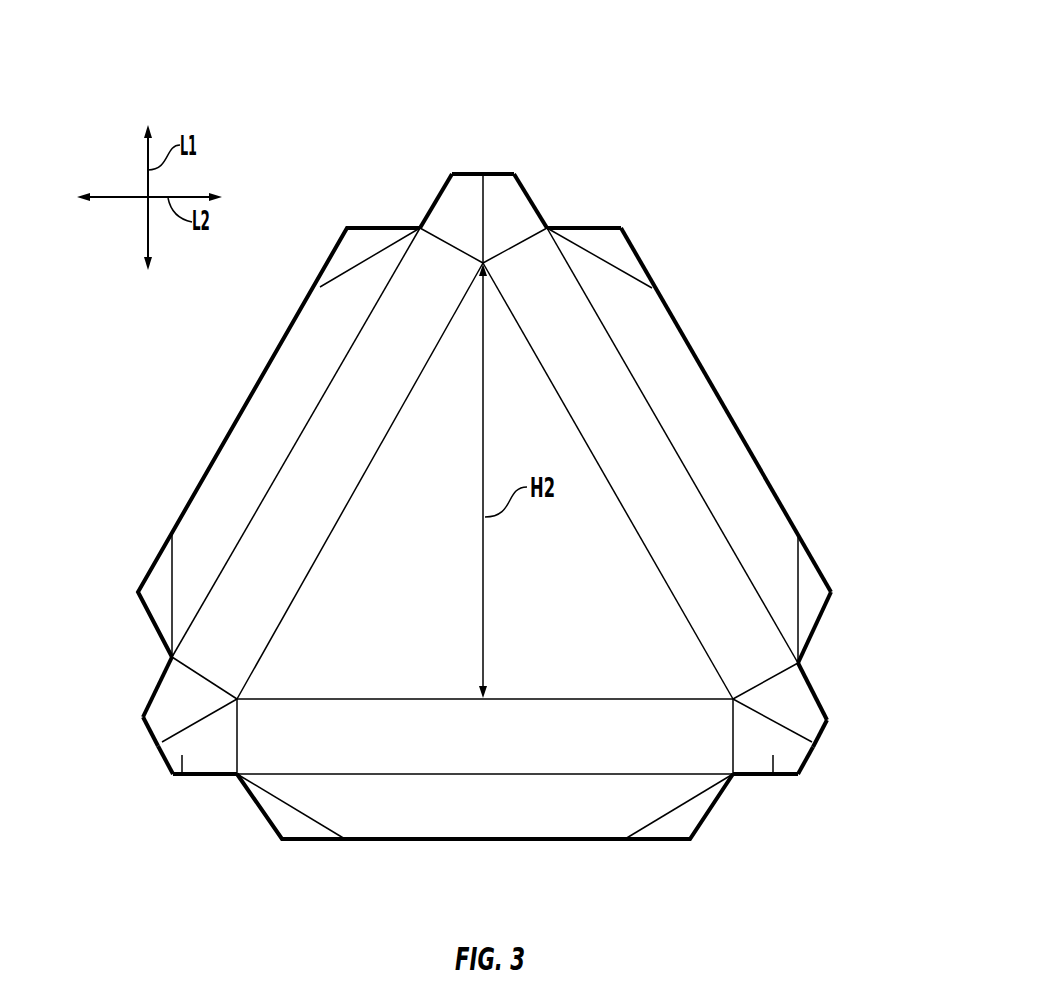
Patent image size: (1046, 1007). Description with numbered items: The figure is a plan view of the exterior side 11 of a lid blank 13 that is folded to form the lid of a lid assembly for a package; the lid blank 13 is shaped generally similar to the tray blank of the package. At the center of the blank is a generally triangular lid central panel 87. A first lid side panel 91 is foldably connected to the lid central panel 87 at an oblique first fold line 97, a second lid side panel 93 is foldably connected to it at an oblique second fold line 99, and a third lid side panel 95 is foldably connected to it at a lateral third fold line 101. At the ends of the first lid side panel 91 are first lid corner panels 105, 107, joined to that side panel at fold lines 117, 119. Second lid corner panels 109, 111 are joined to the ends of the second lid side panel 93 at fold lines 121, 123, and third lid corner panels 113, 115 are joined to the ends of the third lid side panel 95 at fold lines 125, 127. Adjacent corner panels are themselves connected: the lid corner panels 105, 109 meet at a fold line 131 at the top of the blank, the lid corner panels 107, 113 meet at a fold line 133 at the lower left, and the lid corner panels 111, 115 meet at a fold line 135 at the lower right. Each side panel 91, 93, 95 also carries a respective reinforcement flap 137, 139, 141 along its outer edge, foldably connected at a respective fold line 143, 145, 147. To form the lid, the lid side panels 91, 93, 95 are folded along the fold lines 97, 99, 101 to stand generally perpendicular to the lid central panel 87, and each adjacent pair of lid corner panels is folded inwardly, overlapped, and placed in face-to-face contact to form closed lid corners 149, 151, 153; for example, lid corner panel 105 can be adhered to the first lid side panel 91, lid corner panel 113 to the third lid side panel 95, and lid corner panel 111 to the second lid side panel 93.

The exterior side 11 is at (630, 313).
The lid blank 13 is at (722, 380).
The lid central panel 87 is at (614, 624).
The first lid side panel 91 is at (358, 439).
The second lid side panel 93 is at (623, 433).
The third lid side panel 95 is at (525, 751).
The first fold line 97 is at (333, 530).
The second fold line 99 is at (553, 393).
The third fold line 101 is at (335, 698).
The first lid corner panel 105 is at (457, 207).
The first lid corner panel 107 is at (167, 707).
The second lid corner panel 109 is at (508, 207).
The second lid corner panel 111 is at (803, 713).
The third lid corner panel 113 is at (182, 778).
The third lid corner panel 115 is at (773, 758).
The fold line 117 is at (445, 238).
The fold line 119 is at (168, 685).
The fold line 121 is at (537, 222).
The fold line 123 is at (773, 680).
The fold line 125 is at (235, 746).
The fold line 127 is at (735, 753).
The fold line 131 is at (487, 200).
The fold line 133 is at (158, 757).
The fold line 135 is at (802, 765).
The reinforcement flap 137 is at (252, 445).
The reinforcement flap 139 is at (672, 363).
The reinforcement flap 141 is at (388, 823).
The fold line 143 is at (237, 515).
The fold line 145 is at (695, 482).
The fold line 147 is at (503, 774).
The lid corner 149 is at (493, 160).
The lid corner 151 is at (153, 768).
The lid corner 153 is at (835, 727).